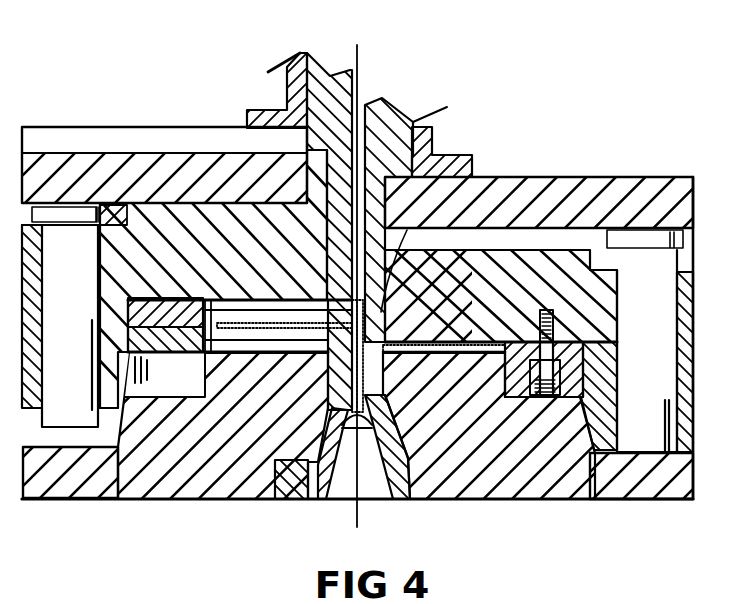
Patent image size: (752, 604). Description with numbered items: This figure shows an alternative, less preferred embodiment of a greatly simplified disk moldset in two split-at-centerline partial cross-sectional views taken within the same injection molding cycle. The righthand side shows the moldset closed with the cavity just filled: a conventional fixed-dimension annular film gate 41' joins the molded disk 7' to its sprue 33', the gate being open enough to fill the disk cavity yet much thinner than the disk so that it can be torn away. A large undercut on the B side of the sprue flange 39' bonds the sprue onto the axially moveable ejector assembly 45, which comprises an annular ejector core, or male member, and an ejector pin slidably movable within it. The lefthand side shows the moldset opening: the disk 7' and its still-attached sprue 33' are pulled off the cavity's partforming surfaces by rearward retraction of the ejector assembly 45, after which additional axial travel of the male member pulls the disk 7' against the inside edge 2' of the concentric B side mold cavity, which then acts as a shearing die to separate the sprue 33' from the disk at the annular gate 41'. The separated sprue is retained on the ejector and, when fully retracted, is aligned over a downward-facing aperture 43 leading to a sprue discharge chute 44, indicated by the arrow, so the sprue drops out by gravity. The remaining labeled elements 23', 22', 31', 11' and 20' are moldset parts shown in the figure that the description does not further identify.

The disk 7' is at (240, 221).
The sprue discharge chute 44 is at (438, 39).
The ejector assembly 45 is at (390, 152).
The sprue flange 39' is at (376, 302).
The inside edge of the concentric B side mold cavity 2' is at (388, 302).
The upper plate 23' is at (376, 302).
The side wall 22' is at (376, 302).
The downward-facing aperture 43 is at (203, 356).
The annular film gate 41' is at (376, 302).
The sprue 33' is at (376, 302).
The nozzle wall 31' is at (376, 302).
The body block 11' is at (376, 302).
The bolt assembly 20' is at (376, 302).